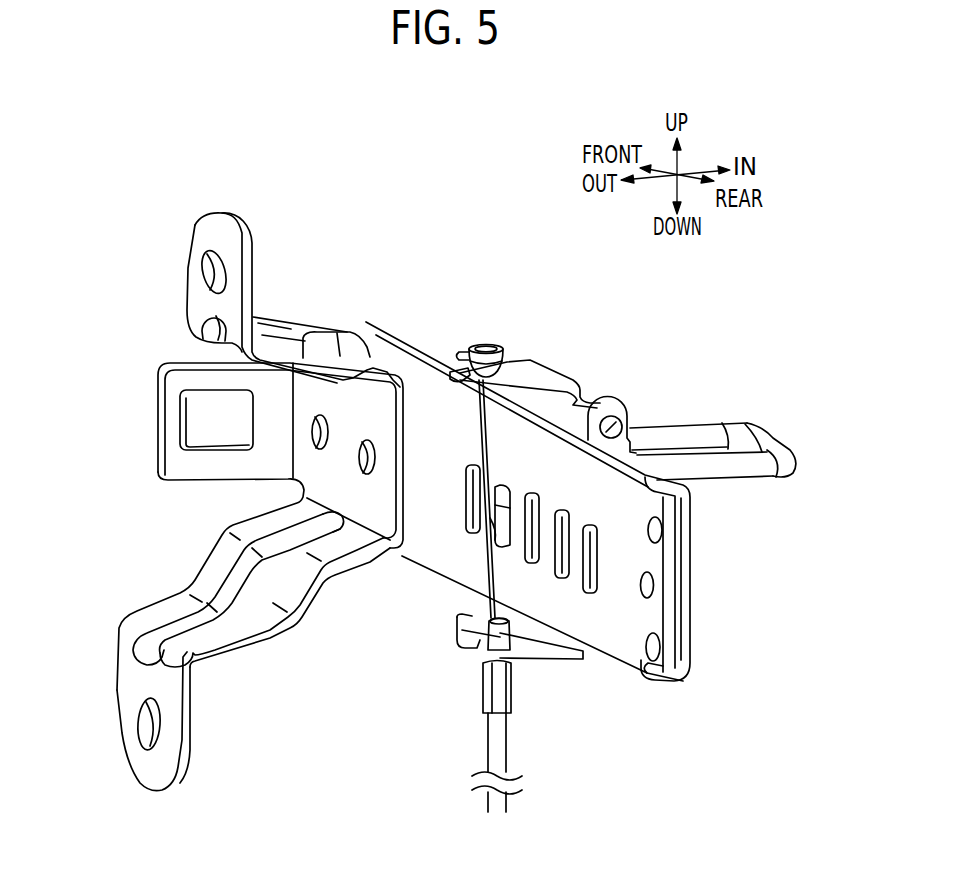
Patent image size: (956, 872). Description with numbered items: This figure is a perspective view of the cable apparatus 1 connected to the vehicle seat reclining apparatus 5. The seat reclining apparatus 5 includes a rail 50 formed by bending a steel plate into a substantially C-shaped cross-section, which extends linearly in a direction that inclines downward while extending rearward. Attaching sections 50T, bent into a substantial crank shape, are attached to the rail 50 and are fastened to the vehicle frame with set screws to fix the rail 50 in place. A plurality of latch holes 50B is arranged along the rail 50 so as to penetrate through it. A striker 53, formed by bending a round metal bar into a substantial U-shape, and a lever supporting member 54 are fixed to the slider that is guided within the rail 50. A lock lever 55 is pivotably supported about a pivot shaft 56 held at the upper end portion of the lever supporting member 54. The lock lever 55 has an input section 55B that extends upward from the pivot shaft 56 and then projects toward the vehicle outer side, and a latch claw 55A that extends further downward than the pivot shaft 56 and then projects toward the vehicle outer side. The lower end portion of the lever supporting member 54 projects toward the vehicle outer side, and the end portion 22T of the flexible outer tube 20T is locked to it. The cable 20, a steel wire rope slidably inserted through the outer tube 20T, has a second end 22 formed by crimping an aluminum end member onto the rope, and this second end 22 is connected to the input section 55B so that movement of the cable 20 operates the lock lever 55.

The cable apparatus 1 is at (453, 781).
The seat reclining apparatus 5 is at (360, 273).
The rail 50 is at (607, 666).
The attaching sections 50T is at (207, 235).
The latch holes 50B is at (593, 547).
The lock lever 55 is at (548, 368).
The latch claw 55A is at (503, 533).
The input section 55B is at (455, 370).
The pivot shaft 56 is at (628, 412).
The lever supporting member 54 is at (637, 450).
The striker 53 is at (783, 463).
The second end 22 is at (488, 350).
The end portion 22T is at (487, 682).
The cable 20 is at (480, 582).
The outer tube 20T is at (497, 755).